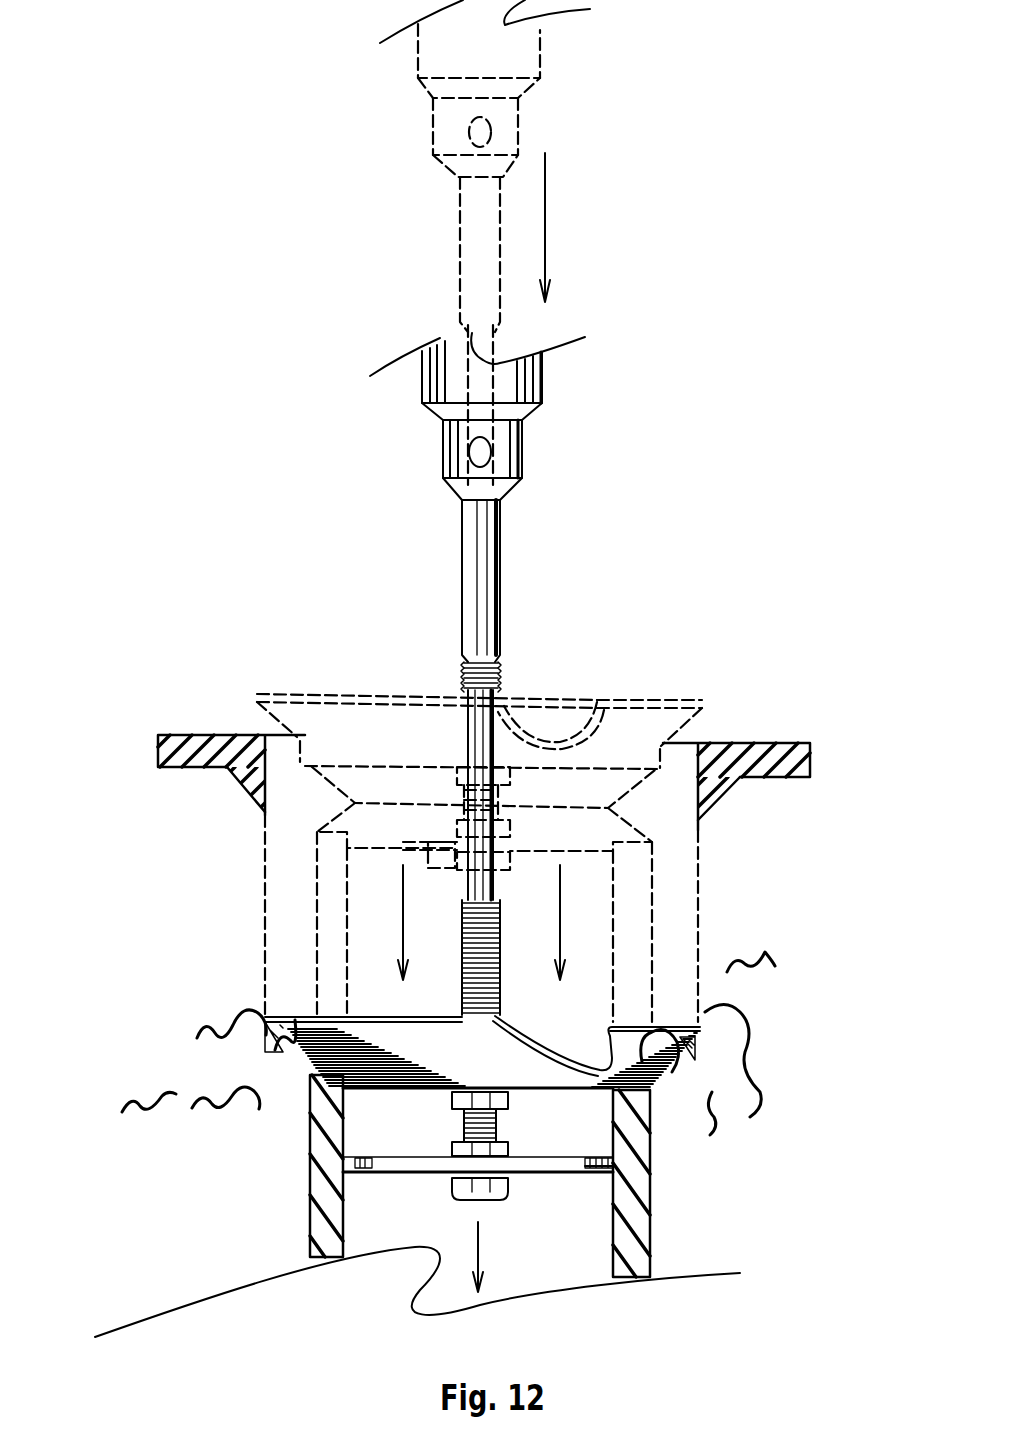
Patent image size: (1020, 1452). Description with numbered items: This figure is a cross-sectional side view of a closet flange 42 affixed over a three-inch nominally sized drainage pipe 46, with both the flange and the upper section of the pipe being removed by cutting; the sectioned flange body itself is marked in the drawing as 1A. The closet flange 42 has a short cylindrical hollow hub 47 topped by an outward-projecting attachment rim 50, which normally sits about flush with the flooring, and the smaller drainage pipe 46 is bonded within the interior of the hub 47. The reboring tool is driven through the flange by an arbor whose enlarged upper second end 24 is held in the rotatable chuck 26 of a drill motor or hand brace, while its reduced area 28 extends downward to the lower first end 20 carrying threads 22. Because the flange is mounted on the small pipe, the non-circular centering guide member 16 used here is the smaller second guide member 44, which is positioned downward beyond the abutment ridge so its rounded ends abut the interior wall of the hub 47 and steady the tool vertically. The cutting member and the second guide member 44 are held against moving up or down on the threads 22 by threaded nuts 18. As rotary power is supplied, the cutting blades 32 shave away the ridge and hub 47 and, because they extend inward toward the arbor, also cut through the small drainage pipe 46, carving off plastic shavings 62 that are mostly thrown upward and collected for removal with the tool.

The cup-shaped housing 1A is at (373, 718).
The non-circular centering guide member 16 is at (592, 1180).
The threaded nuts 18 is at (503, 832).
The first end 20 is at (457, 1117).
The threads 22 is at (498, 1005).
The second end 24 is at (460, 222).
The rotatable chuck 26 is at (540, 57).
The reduced area 28 is at (497, 728).
The cutting blades 32 is at (598, 702).
The closet flange 42 is at (170, 738).
The second guide member 44 is at (453, 858).
The drainage pipe 46 is at (330, 872).
The hub 47 is at (265, 1040).
The attachment rim 50 is at (203, 735).
The shavings 62 is at (225, 1090).